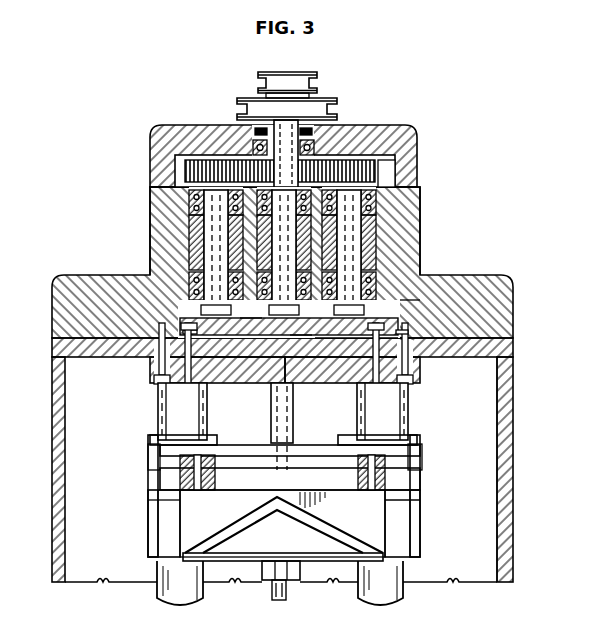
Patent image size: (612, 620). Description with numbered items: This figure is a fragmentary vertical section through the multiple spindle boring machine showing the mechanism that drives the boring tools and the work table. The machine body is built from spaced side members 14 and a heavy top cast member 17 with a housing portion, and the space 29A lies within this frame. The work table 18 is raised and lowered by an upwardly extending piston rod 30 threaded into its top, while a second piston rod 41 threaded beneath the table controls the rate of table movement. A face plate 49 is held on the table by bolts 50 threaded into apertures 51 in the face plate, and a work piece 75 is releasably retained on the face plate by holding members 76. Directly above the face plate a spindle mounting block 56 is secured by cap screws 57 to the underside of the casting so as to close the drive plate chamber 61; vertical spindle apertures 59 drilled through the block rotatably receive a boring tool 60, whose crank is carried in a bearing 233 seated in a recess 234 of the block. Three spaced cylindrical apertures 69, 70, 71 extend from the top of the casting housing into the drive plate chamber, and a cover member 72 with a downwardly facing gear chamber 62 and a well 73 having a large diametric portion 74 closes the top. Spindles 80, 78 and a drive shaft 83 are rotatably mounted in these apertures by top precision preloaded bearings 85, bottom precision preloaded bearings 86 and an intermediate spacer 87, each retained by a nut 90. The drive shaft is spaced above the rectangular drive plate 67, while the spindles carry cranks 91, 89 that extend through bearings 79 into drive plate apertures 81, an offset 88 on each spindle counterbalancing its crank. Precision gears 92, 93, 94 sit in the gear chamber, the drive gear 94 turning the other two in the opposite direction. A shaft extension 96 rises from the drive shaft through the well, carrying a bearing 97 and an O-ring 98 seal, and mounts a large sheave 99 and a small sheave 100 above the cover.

The side members 14 is at (513, 392).
The top cast member 17 is at (505, 300).
The work table 18 is at (165, 479).
The cavity 29A is at (500, 502).
The piston rod 30 is at (272, 408).
The piston rod 41 is at (283, 592).
The face plate 49 is at (300, 463).
The bolts 50 is at (216, 477).
The apertures 51 is at (218, 458).
The spindle mounting block 56 is at (158, 366).
The cap screws 57 is at (418, 372).
The spindle apertures 59 is at (200, 378).
The boring tool 60 is at (357, 383).
The drive plate chamber 61 is at (385, 318).
The gear chamber 62 is at (410, 166).
The drive plate 67 is at (300, 336).
The cylindrical aperture 69 is at (370, 232).
The cylindrical aperture 70 is at (190, 238).
The cylindrical aperture 71 is at (312, 230).
The cover member 72 is at (380, 126).
The well 73 is at (286, 153).
The large diametric portion 74 is at (309, 142).
The work piece 75 is at (412, 440).
The holding members 76 is at (422, 446).
The spindle 78 is at (218, 252).
The bearing 79 is at (289, 324).
The spindle 80 is at (363, 262).
The drive plate apertures 81 is at (356, 306).
The drive shaft 83 is at (284, 252).
The top precision preloaded bearings 85 is at (382, 202).
The bottom precision preloaded bearings 86 is at (372, 285).
The spacer 87 is at (207, 262).
The offset 88 is at (216, 286).
The crank 89 is at (356, 348).
The nut 90 is at (340, 281).
The crank 91 is at (255, 335).
The precision gear 92 is at (199, 203).
The precision gear 93 is at (397, 163).
The precision gear 94 is at (284, 202).
The shaft extension 96 is at (297, 128).
The bearing 97 is at (272, 150).
The O-ring 98 is at (262, 143).
The large sheave 99 is at (252, 98).
The small sheave 100 is at (276, 72).
The bearing 233 is at (159, 325).
The recess 234 is at (196, 332).